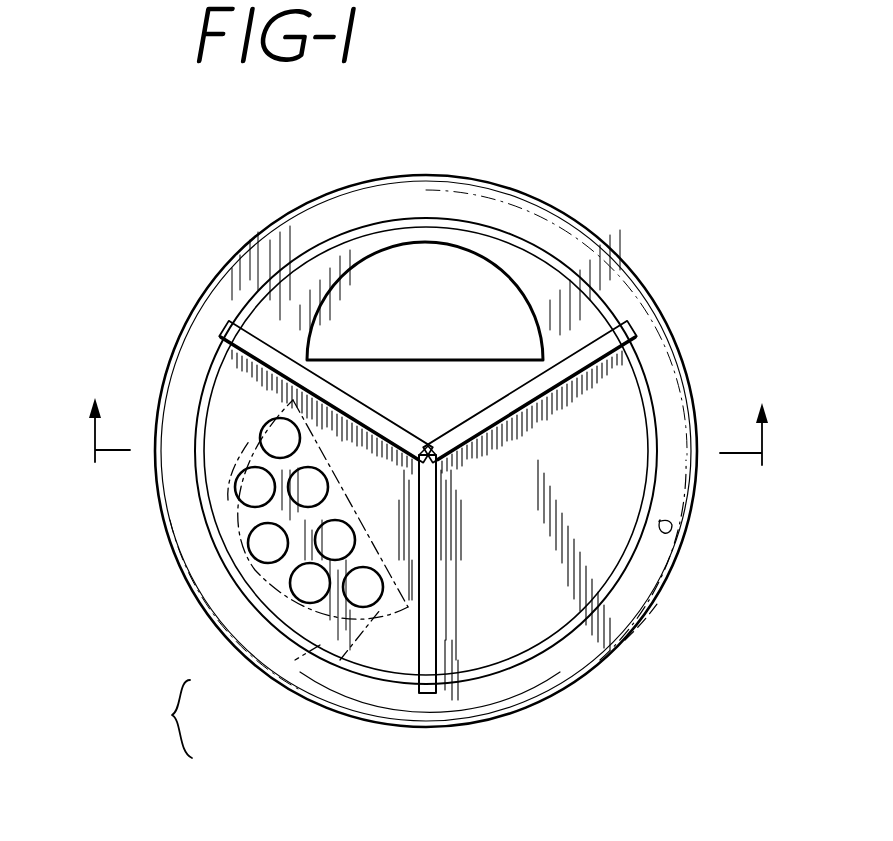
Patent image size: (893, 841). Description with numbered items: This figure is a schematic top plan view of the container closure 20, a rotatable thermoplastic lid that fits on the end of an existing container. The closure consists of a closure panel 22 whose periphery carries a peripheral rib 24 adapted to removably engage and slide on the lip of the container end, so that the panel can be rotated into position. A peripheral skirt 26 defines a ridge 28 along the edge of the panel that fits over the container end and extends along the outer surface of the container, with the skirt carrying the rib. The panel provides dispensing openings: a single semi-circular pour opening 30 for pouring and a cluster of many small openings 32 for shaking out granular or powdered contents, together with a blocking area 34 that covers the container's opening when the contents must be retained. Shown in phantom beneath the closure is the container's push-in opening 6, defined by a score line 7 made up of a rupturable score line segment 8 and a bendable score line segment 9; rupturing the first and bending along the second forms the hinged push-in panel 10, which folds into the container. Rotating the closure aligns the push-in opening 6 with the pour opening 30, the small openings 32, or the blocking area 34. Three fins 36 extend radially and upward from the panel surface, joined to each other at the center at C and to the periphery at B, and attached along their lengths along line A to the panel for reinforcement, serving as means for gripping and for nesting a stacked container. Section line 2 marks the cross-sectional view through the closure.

The container closure 20 is at (592, 178).
The closure panel 22 is at (593, 427).
The peripheral rib 24 is at (672, 530).
The peripheral skirt 26 is at (693, 623).
The ridge 28 is at (595, 630).
The pour opening 30 is at (443, 244).
The small openings 32 is at (250, 485).
The blocking area 34 is at (522, 590).
The fins 36 is at (422, 485).
The hinged push-in panel 10 is at (378, 548).
The push-in opening 6 is at (236, 536).
The score line 7 is at (168, 719).
The rupturable score line segment 8 is at (325, 630).
The bendable score line segment 9 is at (383, 612).
The section line 2 is at (428, 433).
The line A is at (493, 393).
The periphery attachment point B is at (236, 318).
The center attachment point C is at (428, 448).